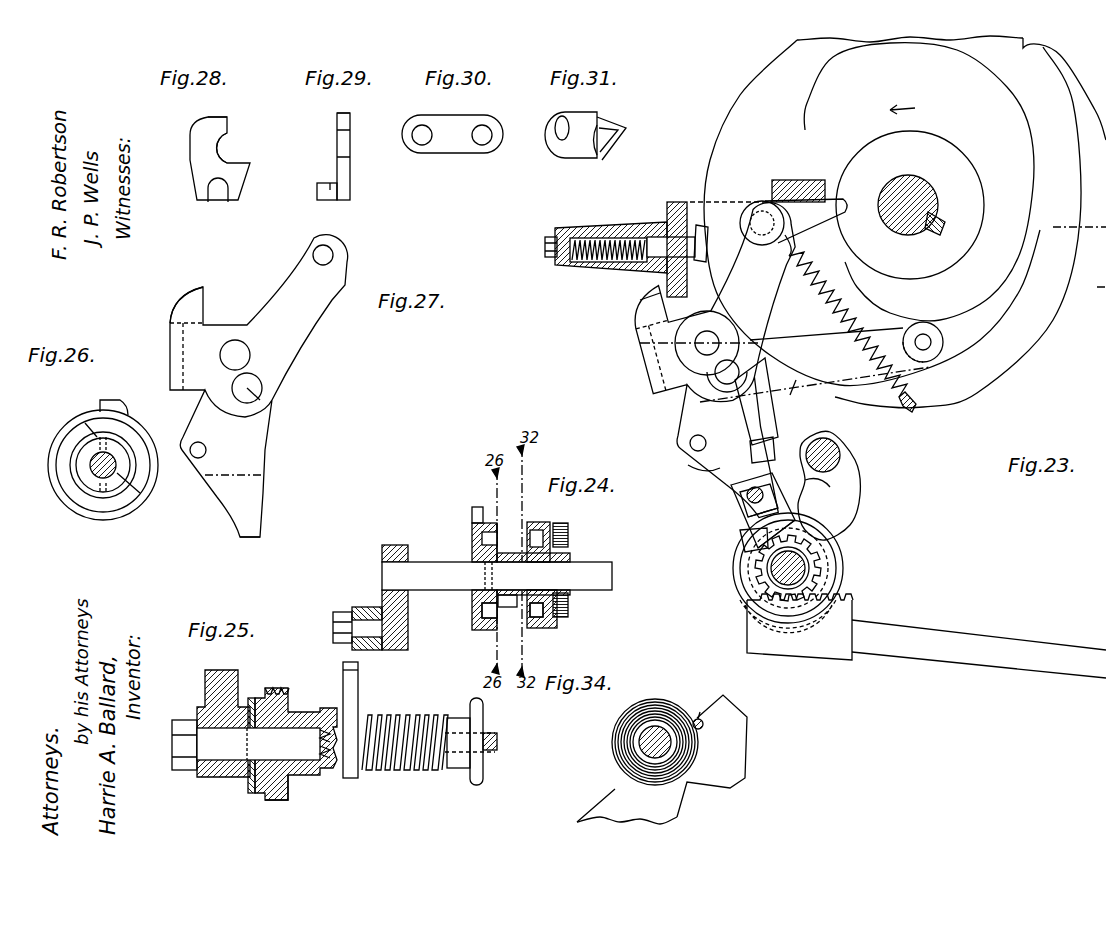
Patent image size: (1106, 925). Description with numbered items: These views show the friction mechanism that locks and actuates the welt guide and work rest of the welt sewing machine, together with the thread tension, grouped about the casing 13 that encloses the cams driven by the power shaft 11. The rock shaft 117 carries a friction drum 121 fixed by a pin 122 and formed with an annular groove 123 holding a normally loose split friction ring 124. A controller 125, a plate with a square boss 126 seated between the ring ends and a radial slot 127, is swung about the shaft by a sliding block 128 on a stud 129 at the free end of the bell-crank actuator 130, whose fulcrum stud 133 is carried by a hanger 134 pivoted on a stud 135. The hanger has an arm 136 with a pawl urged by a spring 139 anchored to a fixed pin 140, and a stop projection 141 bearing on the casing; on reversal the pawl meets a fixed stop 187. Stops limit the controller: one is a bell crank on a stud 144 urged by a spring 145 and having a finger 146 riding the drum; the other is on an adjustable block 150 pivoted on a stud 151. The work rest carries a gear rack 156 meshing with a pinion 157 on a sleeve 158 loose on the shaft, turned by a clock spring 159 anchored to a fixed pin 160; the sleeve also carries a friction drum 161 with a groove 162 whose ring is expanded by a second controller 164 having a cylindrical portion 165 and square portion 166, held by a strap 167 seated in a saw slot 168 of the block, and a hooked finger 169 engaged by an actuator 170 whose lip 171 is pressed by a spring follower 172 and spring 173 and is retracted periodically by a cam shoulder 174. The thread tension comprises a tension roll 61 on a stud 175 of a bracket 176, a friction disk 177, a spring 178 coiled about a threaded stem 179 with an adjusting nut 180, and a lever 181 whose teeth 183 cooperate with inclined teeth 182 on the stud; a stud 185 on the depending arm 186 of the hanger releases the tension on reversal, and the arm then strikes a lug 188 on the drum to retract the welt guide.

In FIG. 23, the power shaft 11 is at (908, 177).
In FIG. 23, the casing 13 is at (667, 208).
In FIG. 25, the tension roll 61 is at (288, 800).
In FIG. 26, the rock shaft 117 is at (132, 480).
In FIG. 24, the rock shaft 117 is at (497, 576).
In FIG. 34, the rock shaft 117 is at (700, 755).
In FIG. 23, the rock shaft 117 is at (796, 627).
In FIG. 26, the friction drum 121 is at (72, 440).
In FIG. 24, the friction drum 121 is at (472, 605).
In FIG. 23, the friction drum 121 is at (844, 580).
In FIG. 24, the pin 122 is at (470, 550).
In FIG. 26, the annular groove 123 is at (115, 492).
In FIG. 24, the annular groove 123 is at (480, 615).
In FIG. 26, the split friction ring 124 is at (130, 437).
In FIG. 23, the split friction ring 124 is at (830, 565).
In FIG. 23, the controller 125 is at (755, 535).
In FIG. 23, the square boss 126 is at (742, 548).
In FIG. 23, the radial slot 127 is at (752, 515).
In FIG. 23, the sliding block 128 is at (745, 494).
In FIG. 23, the stud 129 is at (758, 486).
In FIG. 23, the actuator 130 is at (912, 227).
In FIG. 27, the fulcrum stud 133 is at (258, 398).
In FIG. 23, the fulcrum stud 133 is at (705, 385).
In FIG. 27, the hanger 134 is at (268, 385).
In FIG. 23, the hanger 134 is at (735, 355).
In FIG. 27, the stud 135 is at (236, 355).
In FIG. 23, the stud 135 is at (675, 347).
In FIG. 27, the arm 136 is at (300, 320).
In FIG. 23, the arm 136 is at (745, 322).
In FIG. 23, the spring 139 is at (842, 286).
In FIG. 23, the fixed pin 140 is at (912, 410).
In FIG. 27, the stop projection 141 is at (200, 295).
In FIG. 23, the stop projection 141 is at (650, 312).
In FIG. 23, the stud 144 is at (842, 455).
In FIG. 31, the spring 145 is at (607, 118).
In FIG. 23, the finger 146 is at (852, 510).
In FIG. 31, the adjustable block 150 is at (578, 152).
In FIG. 23, the stud 151 is at (935, 328).
In FIG. 23, the gear rack 156 is at (852, 608).
In FIG. 24, the pinion 157 is at (510, 608).
In FIG. 24, the sleeve 158 is at (562, 553).
In FIG. 34, the sleeve 158 is at (632, 760).
In FIG. 24, the clock spring 159 is at (570, 605).
In FIG. 34, the clock spring 159 is at (660, 700).
In FIG. 34, the fixed pin 160 is at (705, 725).
In FIG. 24, the friction drum 161 is at (558, 622).
In FIG. 24, the annular groove 162 is at (543, 625).
In FIG. 28, the controller 164 is at (195, 170).
In FIG. 29, the controller 164 is at (351, 170).
In FIG. 28, the cylindrical portion 165 is at (218, 185).
In FIG. 29, the cylindrical portion 165 is at (335, 183).
In FIG. 28, the square portion 166 is at (212, 205).
In FIG. 29, the square portion 166 is at (317, 193).
In FIG. 30, the strap 167 is at (455, 152).
In FIG. 31, the saw slot 168 is at (602, 143).
In FIG. 28, the hooked finger 169 is at (205, 119).
In FIG. 29, the hooked finger 169 is at (351, 120).
In FIG. 23, the actuator 170 is at (776, 445).
In FIG. 23, the lip 171 is at (700, 225).
In FIG. 23, the spring follower 172 is at (633, 248).
In FIG. 23, the spring 173 is at (598, 266).
In FIG. 23, the cam shoulder 174 is at (1062, 52).
In FIG. 25, the stud 175 is at (290, 710).
In FIG. 25, the bracket 176 is at (197, 690).
In FIG. 25, the friction disk 177 is at (250, 790).
In FIG. 25, the spring 178 is at (412, 772).
In FIG. 25, the screw-threaded stem 179 is at (497, 741).
In FIG. 25, the adjusting nut 180 is at (484, 776).
In FIG. 25, the lever 181 is at (358, 686).
In FIG. 25, the inclined teeth 182 is at (322, 752).
In FIG. 25, the teeth 183 is at (322, 736).
In FIG. 27, the stud 185 is at (206, 452).
In FIG. 23, the stud 185 is at (690, 443).
In FIG. 27, the depending arm 186 is at (262, 511).
In FIG. 23, the depending arm 186 is at (708, 466).
In FIG. 23, the fixed stop 187 is at (812, 180).
In FIG. 26, the lug 188 is at (112, 402).
In FIG. 24, the lug 188 is at (470, 510).
In FIG. 23, the lug 188 is at (830, 492).